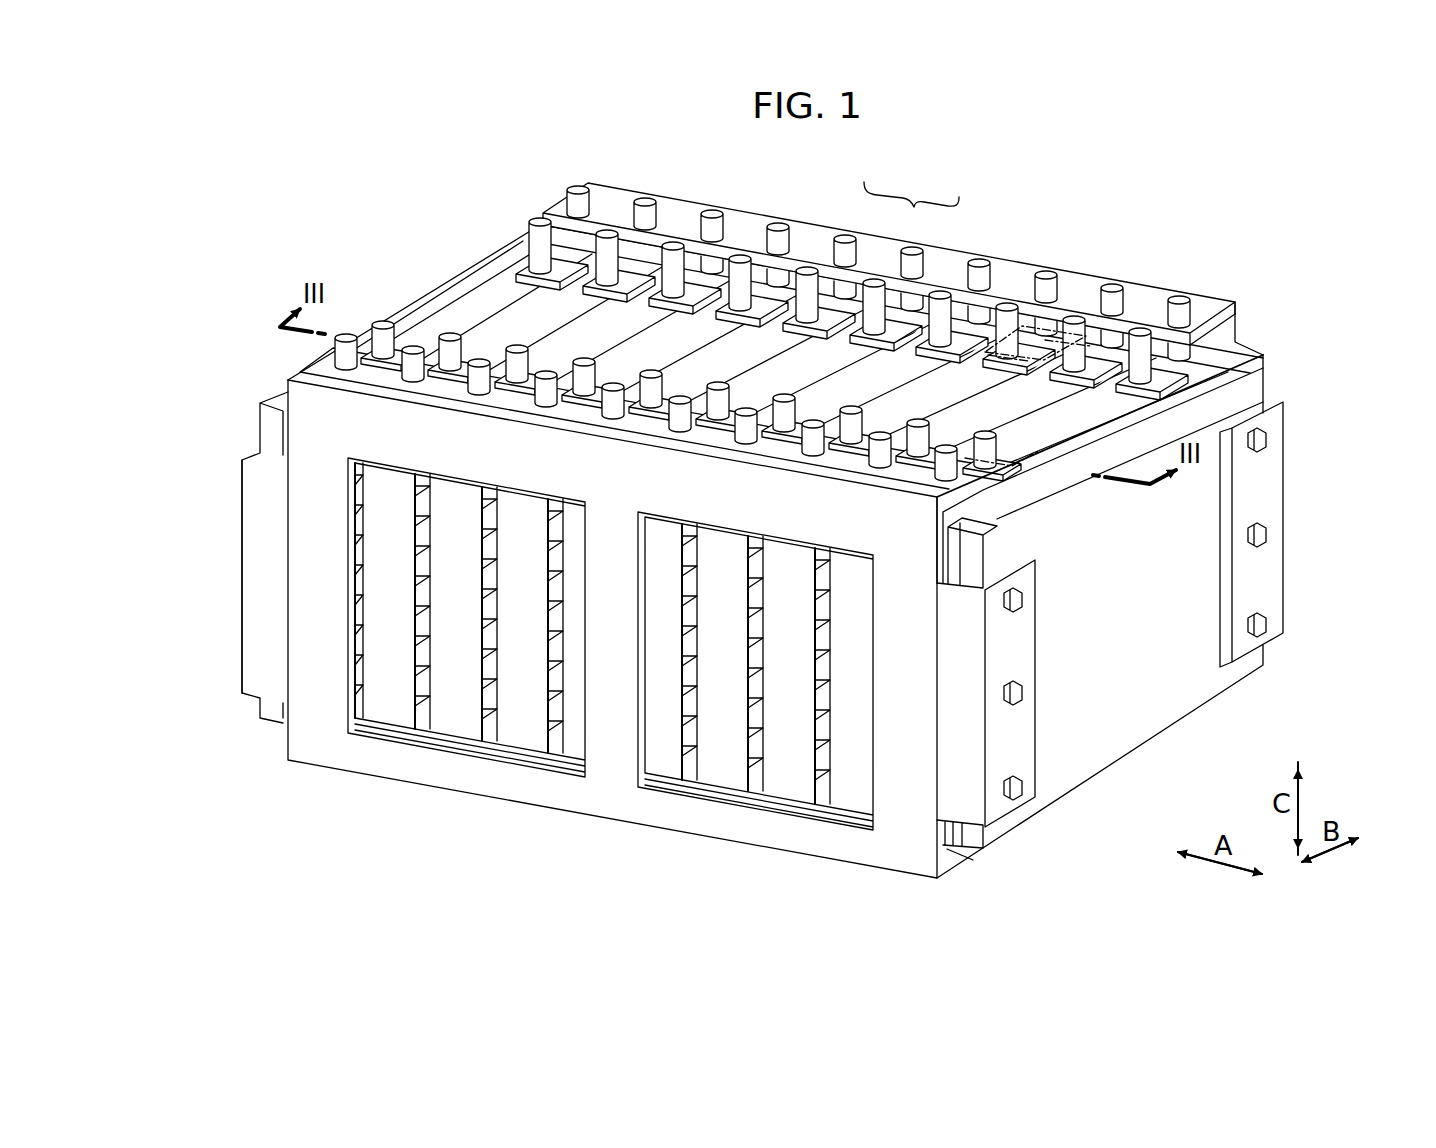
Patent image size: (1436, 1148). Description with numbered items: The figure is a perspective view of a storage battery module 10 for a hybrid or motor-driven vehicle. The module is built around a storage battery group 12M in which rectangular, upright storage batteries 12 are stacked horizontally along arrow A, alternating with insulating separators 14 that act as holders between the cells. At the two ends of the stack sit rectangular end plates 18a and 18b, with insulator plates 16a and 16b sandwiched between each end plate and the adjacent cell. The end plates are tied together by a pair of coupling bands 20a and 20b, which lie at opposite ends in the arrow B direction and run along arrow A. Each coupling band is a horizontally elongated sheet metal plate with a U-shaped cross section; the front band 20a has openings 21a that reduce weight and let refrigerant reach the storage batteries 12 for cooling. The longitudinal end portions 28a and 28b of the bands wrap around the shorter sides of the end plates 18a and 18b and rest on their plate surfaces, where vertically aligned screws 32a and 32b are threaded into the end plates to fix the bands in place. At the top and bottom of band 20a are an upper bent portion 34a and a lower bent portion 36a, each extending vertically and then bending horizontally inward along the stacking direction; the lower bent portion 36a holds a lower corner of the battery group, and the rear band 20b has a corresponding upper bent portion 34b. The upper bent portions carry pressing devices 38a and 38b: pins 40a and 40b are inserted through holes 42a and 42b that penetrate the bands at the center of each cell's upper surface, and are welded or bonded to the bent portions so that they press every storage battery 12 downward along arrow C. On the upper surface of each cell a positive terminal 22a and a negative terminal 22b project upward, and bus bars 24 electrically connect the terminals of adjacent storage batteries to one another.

The storage battery module 10 is at (701, 137).
The storage battery 12 is at (848, 352).
The storage battery group 12M is at (911, 180).
The insulating separator 14 is at (543, 338).
The insulator plate 16a is at (952, 578).
The insulator plate 16b is at (468, 291).
The end plate 18a is at (970, 578).
The end plate 18b is at (480, 268).
The coupling band 20a is at (436, 798).
The coupling band 20b is at (1058, 222).
The opening 21a is at (585, 700).
The positive terminal 22a is at (851, 442).
The negative terminal 22b is at (918, 455).
The bus bar 24 is at (1092, 300).
The end portion 28a is at (255, 453).
The end portion 28b is at (1237, 583).
The screw 32a is at (1024, 693).
The screw 32b is at (1260, 640).
The upper bent portion 34a is at (313, 370).
The upper bent portion 34b is at (746, 213).
The lower bent portion 36a is at (975, 856).
The pressing device 38a is at (655, 418).
The pressing device 38b is at (1212, 312).
The pin 40a is at (676, 430).
The pin 40b is at (1179, 298).
The hole 42a is at (690, 434).
The hole 42b is at (1177, 322).